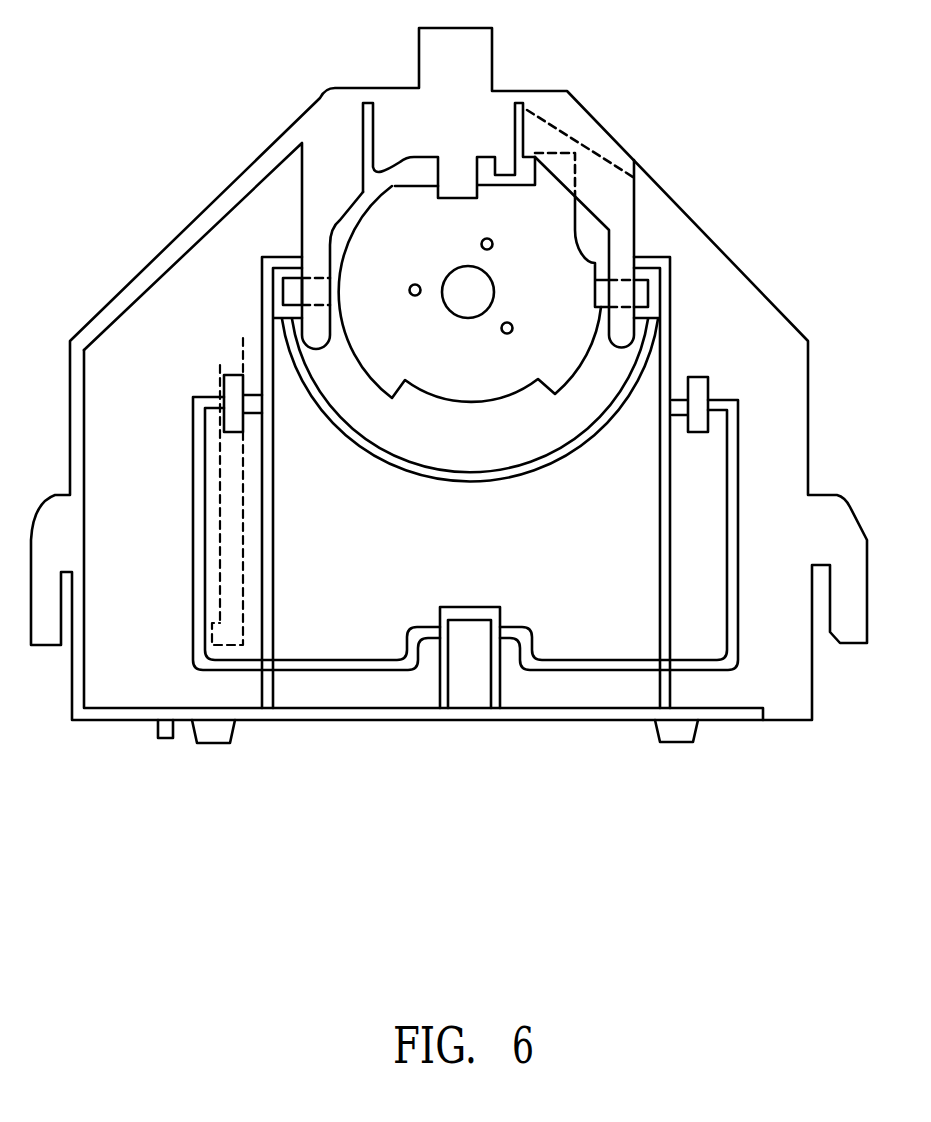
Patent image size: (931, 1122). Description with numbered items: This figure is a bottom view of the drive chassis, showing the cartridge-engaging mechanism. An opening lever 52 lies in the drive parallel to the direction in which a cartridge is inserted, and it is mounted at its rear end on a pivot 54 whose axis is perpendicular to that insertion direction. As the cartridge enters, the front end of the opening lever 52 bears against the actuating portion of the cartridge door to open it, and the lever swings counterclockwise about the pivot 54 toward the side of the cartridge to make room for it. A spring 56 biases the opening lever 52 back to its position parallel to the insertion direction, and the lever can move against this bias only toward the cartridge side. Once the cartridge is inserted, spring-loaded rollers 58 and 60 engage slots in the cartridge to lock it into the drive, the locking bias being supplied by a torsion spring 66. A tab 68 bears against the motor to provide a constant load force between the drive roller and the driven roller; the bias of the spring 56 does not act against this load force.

The opening lever 52 is at (243, 512).
The pivot 54 is at (238, 369).
The spring 56 is at (243, 340).
The spring-loaded roller 58 is at (230, 394).
The spring-loaded roller 60 is at (693, 377).
The torsion spring 66 is at (740, 563).
The tab 68 is at (460, 180).